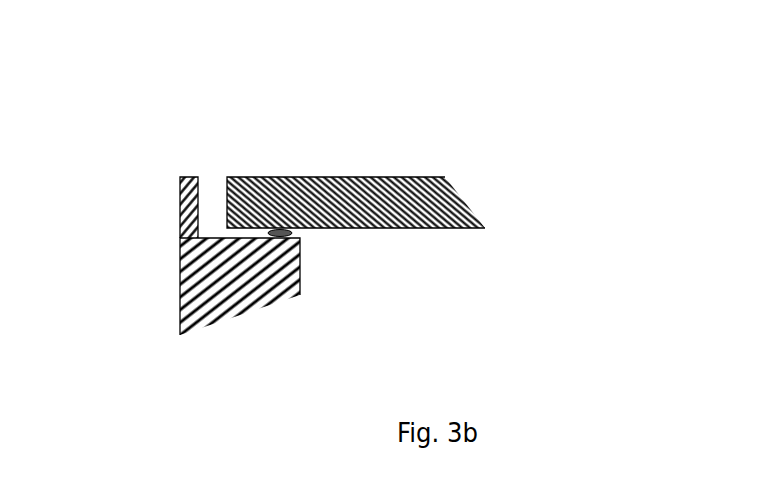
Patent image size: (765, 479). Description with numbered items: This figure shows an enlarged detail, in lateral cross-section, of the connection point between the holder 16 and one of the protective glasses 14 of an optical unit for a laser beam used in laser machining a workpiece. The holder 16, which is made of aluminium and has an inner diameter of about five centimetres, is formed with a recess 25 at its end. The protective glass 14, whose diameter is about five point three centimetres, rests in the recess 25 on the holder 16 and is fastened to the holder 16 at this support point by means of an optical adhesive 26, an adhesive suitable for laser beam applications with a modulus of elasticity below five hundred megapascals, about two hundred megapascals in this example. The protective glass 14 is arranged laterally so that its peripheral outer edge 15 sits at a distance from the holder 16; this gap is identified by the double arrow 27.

The protective glass 14 is at (345, 177).
The peripheral outer edge 15 is at (229, 165).
The holder 16 is at (180, 218).
The recess 25 is at (207, 232).
The optical adhesive 26 is at (292, 233).
The double arrow 27 is at (216, 145).